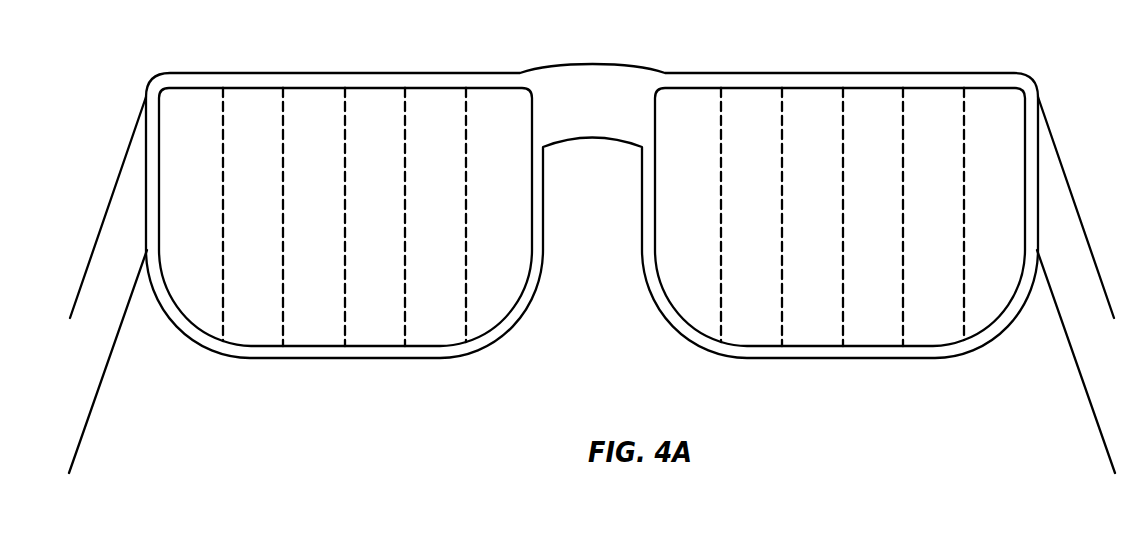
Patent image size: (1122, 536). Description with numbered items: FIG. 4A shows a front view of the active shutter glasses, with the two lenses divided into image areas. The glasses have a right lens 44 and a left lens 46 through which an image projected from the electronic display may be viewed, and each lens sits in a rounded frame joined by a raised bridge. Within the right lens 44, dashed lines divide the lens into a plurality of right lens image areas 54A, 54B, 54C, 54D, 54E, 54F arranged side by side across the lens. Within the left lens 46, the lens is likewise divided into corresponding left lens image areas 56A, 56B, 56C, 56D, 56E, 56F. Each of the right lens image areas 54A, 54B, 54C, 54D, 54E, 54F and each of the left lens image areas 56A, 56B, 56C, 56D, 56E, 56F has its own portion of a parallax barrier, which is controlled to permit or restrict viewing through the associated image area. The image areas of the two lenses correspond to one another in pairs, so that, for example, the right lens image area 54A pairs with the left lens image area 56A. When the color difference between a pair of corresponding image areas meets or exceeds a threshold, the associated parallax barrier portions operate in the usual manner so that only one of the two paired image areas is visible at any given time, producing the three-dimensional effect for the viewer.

The left lens 46 is at (538, 120).
The right lens 44 is at (640, 115).
The left lens image area 56A is at (487, 292).
The left lens image area 56B is at (432, 326).
The left lens image area 56C is at (370, 330).
The left lens image area 56D is at (315, 333).
The left lens image area 56E is at (250, 337).
The left lens image area 56F is at (207, 308).
The right lens image area 54A is at (987, 292).
The right lens image area 54B is at (935, 328).
The right lens image area 54C is at (852, 330).
The right lens image area 54D is at (797, 333).
The right lens image area 54E is at (732, 337).
The right lens image area 54F is at (690, 307).